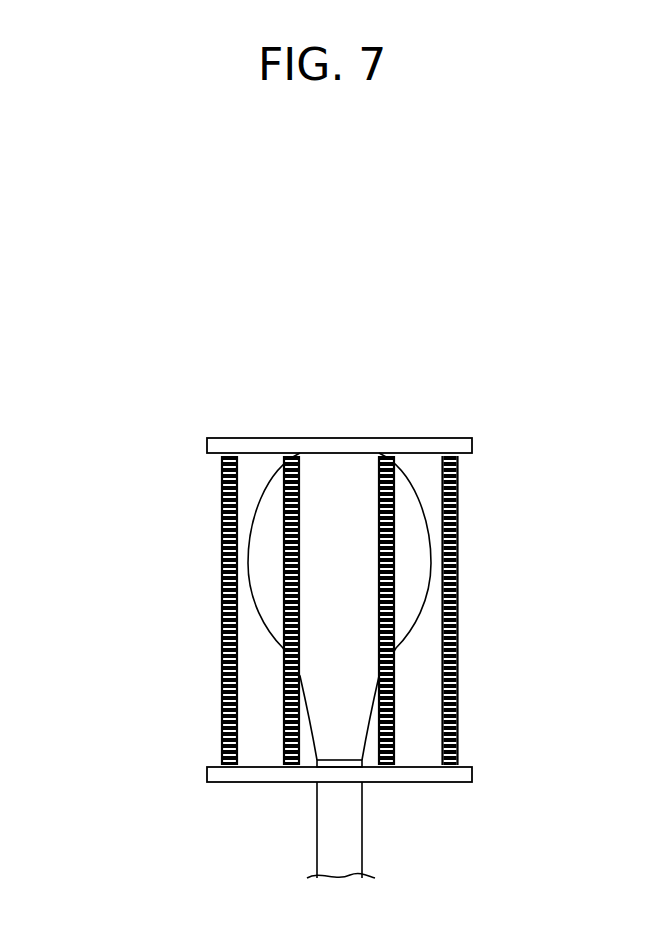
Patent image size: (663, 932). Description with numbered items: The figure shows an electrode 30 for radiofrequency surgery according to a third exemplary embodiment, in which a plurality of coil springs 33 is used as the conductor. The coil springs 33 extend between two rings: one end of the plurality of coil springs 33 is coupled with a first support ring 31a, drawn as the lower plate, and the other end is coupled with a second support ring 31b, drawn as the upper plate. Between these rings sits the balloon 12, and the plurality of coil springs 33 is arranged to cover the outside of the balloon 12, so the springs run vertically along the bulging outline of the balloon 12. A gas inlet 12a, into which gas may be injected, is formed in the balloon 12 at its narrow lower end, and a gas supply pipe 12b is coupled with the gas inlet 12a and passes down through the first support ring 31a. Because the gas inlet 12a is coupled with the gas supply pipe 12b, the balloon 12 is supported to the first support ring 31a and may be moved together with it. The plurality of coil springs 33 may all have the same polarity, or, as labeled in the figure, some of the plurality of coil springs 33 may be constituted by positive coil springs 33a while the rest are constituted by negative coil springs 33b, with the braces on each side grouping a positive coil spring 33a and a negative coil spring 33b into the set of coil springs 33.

The electrode for radiofrequency surgery 30 is at (545, 387).
The balloon 12 is at (272, 500).
The gas inlet 12a is at (340, 762).
The gas supply pipe 12b is at (342, 833).
The first support ring 31a is at (465, 775).
The second support ring 31b is at (472, 440).
The coil springs 33 is at (88, 590).
The positive coil springs 33a is at (221, 612).
The negative coil springs 33b is at (283, 680).